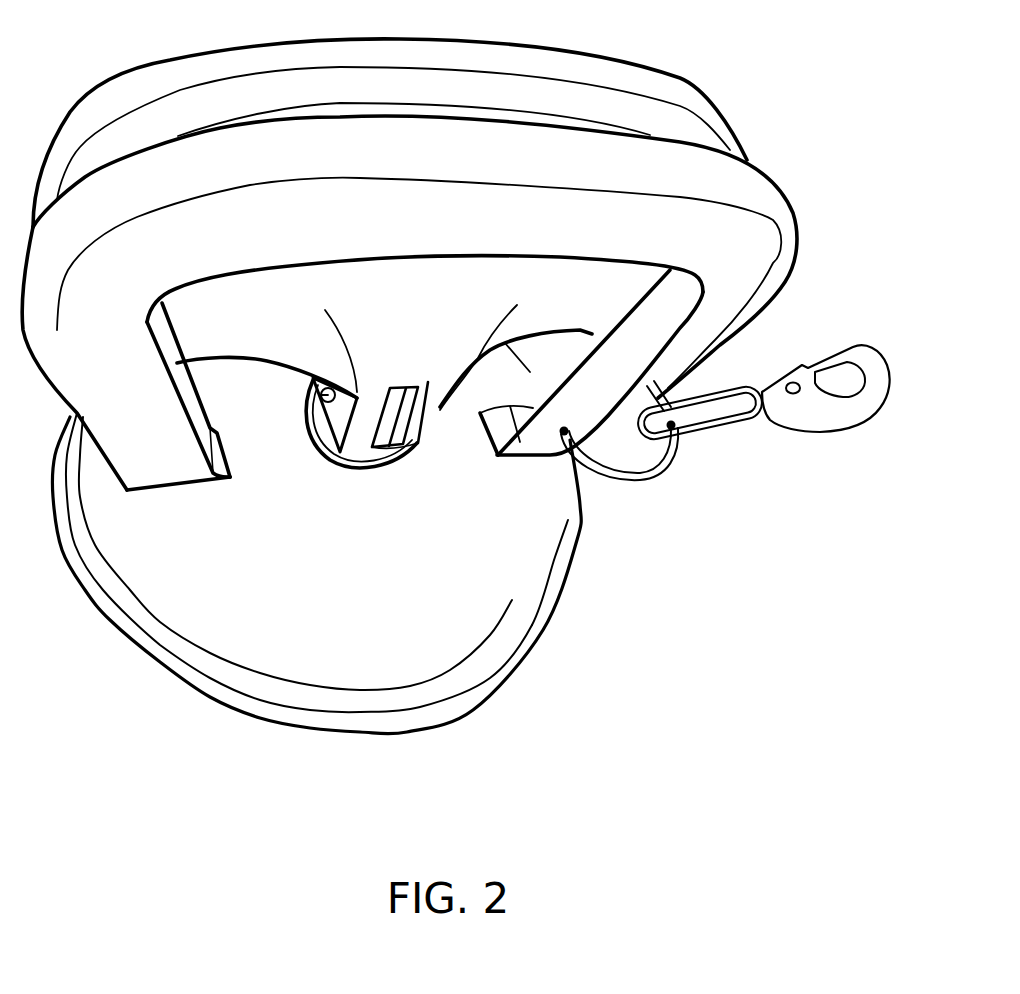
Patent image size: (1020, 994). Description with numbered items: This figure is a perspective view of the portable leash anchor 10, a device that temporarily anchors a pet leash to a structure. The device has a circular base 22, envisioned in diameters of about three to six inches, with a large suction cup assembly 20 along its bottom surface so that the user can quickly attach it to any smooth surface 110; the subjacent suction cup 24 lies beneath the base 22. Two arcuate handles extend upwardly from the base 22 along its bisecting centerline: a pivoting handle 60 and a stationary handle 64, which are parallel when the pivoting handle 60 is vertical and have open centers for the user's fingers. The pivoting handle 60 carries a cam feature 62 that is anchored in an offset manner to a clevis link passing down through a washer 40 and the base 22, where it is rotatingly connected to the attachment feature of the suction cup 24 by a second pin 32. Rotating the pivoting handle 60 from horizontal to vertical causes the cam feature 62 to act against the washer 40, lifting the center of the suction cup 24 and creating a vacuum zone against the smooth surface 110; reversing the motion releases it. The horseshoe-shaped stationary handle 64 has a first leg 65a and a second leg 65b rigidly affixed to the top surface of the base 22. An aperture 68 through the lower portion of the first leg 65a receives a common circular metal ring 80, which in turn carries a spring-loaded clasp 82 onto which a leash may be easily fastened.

The portable leash anchor 10 is at (455, 414).
The suction cup assembly 20 is at (361, 610).
The base 22 is at (512, 600).
The suction cup 24 is at (490, 678).
The second pin 32 is at (319, 397).
The washer 40 is at (325, 466).
The pivoting handle 60 is at (700, 88).
The cam feature 62 is at (398, 453).
The stationary handle 64 is at (787, 193).
The first leg 65a is at (488, 432).
The second leg 65b is at (172, 463).
The aperture 68 is at (560, 440).
The circular metal ring 80 is at (660, 466).
The spring-loaded clasp 82 is at (811, 427).
The smooth surface 110 is at (633, 553).